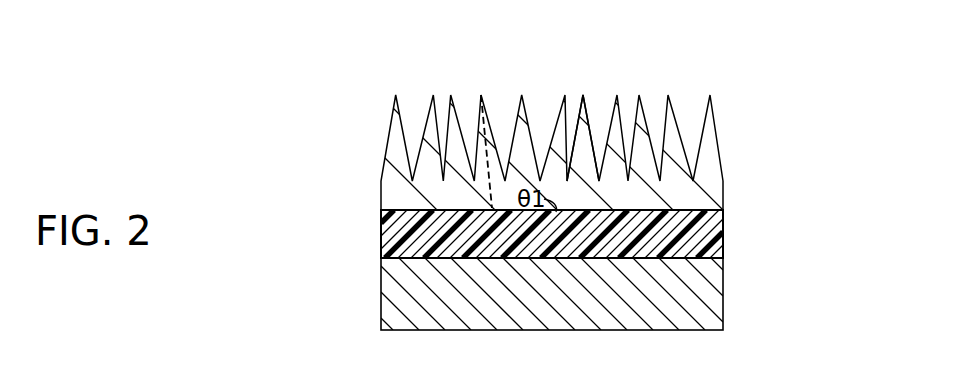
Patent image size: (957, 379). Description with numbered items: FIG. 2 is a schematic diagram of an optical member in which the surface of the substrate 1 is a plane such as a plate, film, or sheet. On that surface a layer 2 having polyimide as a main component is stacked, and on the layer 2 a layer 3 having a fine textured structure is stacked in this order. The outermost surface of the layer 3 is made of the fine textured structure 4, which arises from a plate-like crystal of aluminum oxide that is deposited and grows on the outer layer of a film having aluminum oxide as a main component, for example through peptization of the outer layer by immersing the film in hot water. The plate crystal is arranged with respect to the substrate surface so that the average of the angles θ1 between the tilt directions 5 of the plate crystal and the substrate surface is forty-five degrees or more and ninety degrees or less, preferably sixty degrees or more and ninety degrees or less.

The substrate 1 is at (723, 294).
The layer having polyimide 2 is at (723, 236).
The layer having a fine textured structure 3 is at (723, 153).
The fine textured structure 4 is at (584, 98).
The tilt direction of the plate crystal 5 is at (486, 146).